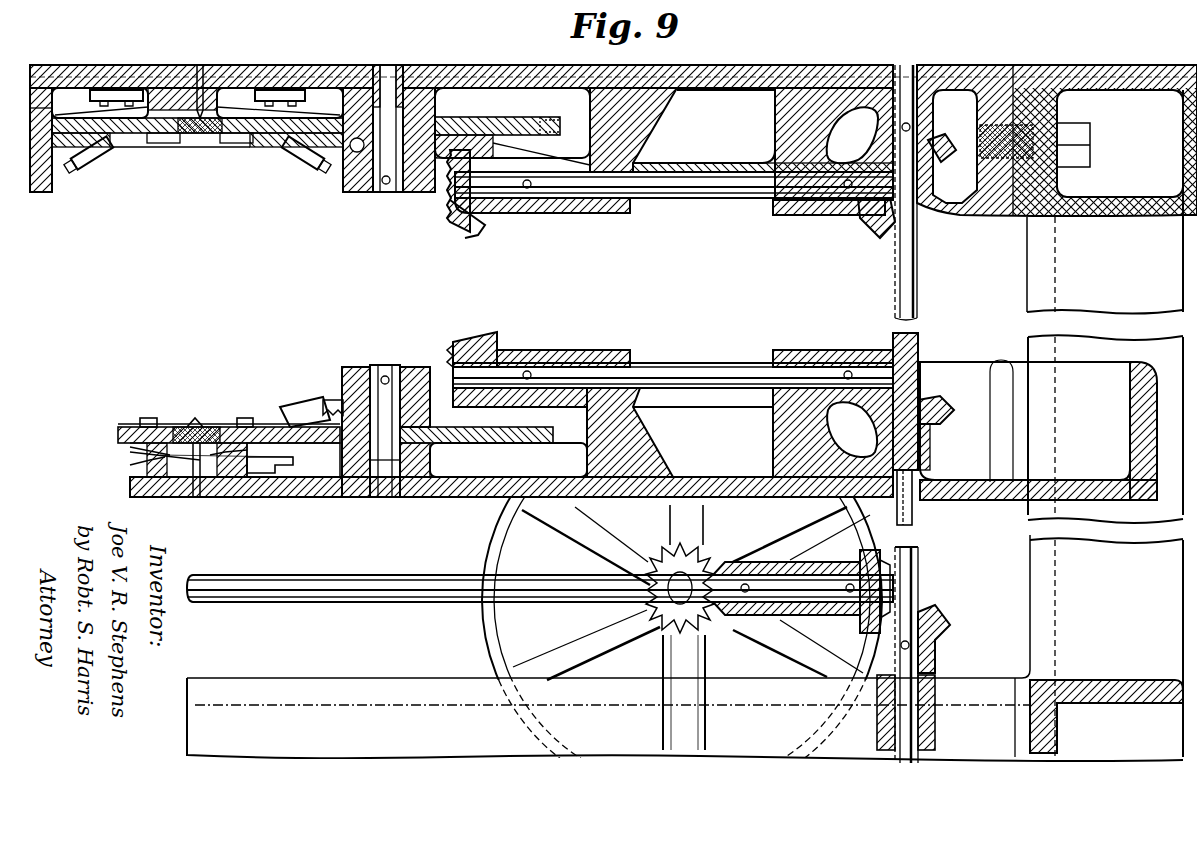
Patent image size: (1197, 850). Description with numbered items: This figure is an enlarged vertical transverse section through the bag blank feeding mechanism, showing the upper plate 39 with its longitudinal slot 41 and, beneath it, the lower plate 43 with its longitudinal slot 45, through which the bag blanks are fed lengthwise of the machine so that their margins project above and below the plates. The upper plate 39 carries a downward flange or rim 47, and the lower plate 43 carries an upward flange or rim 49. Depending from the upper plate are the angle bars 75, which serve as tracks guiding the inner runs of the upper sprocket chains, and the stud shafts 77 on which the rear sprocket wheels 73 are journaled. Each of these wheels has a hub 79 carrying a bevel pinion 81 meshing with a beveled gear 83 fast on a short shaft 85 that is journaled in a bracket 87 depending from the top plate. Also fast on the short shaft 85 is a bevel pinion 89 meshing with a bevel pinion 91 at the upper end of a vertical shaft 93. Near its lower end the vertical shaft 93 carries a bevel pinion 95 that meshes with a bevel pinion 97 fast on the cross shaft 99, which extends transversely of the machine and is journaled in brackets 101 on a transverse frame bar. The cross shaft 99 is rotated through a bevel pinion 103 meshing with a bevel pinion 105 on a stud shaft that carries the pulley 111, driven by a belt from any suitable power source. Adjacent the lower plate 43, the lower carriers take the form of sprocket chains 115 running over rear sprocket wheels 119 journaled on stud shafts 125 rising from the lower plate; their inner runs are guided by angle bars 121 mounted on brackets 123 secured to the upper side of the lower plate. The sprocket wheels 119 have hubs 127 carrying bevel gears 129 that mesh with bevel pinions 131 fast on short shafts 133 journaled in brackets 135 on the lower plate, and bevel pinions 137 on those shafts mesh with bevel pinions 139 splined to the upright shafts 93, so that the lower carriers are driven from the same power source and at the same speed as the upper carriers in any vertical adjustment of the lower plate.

The upper plate 39 is at (318, 75).
The longitudinal slot 41 is at (200, 68).
The lower plate 43 is at (300, 497).
The longitudinal slot 45 is at (196, 497).
The flange or rim 47 is at (975, 217).
The flange or rim 49 is at (1130, 438).
The sprocket wheels 73 is at (125, 133).
The angle bars 75 is at (140, 95).
The stud shafts 77 is at (396, 100).
The hubs 79 is at (350, 192).
The bevel pinions 81 is at (97, 160).
The beveled gears 83 is at (466, 230).
The short shafts 85 is at (675, 198).
The brackets 87 is at (597, 213).
The bevel pinions 89 is at (875, 228).
The bevel pinions 91 is at (944, 162).
The vertical shafts 93 is at (915, 272).
The bevel pinions 95 is at (942, 618).
The bevel pinions 97 is at (918, 558).
The cross shaft 99 is at (530, 577).
The brackets 101 is at (800, 565).
The bevel pinion 103 is at (728, 560).
The bevel pinion 105 is at (670, 545).
The pulley 111 is at (488, 634).
The sprocket chains 115 is at (155, 412).
The sprocket wheels 119 is at (122, 428).
The angle bars 121 is at (132, 466).
The brackets 123 is at (132, 448).
The stud shafts 125 is at (386, 372).
The hubs 127 is at (365, 367).
The bevel gears 129 is at (305, 398).
The bevel pinions 131 is at (472, 342).
The short shafts 133 is at (677, 364).
The brackets 135 is at (598, 351).
The bevel pinions 137 is at (885, 340).
The bevel pinions 139 is at (940, 405).